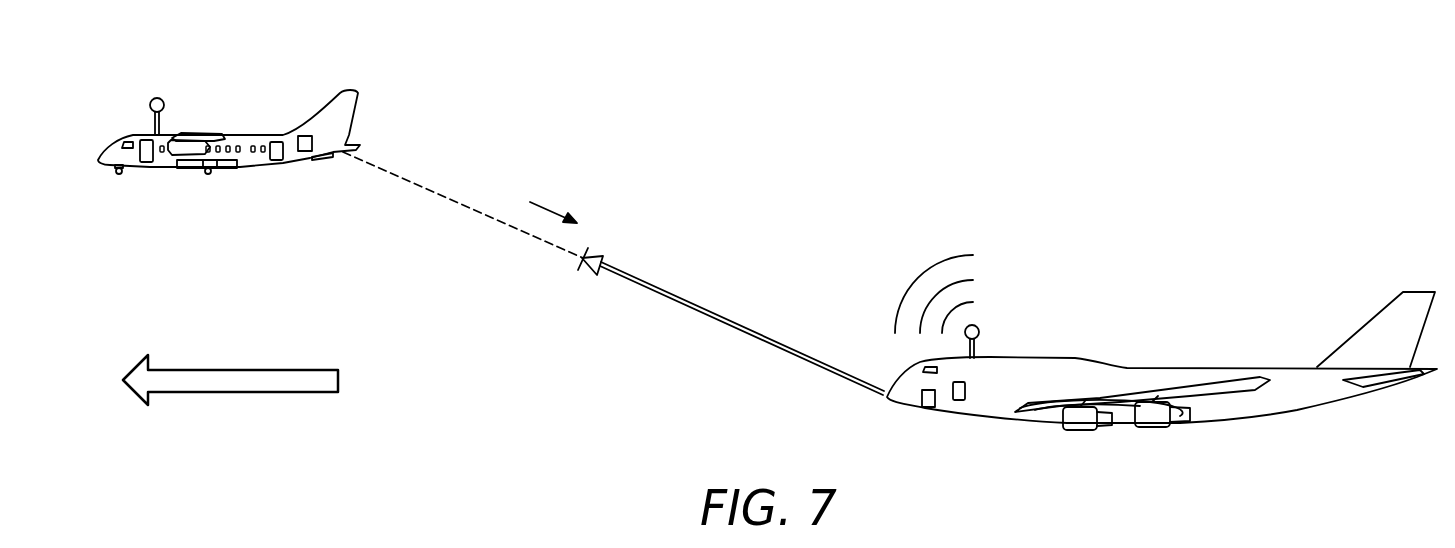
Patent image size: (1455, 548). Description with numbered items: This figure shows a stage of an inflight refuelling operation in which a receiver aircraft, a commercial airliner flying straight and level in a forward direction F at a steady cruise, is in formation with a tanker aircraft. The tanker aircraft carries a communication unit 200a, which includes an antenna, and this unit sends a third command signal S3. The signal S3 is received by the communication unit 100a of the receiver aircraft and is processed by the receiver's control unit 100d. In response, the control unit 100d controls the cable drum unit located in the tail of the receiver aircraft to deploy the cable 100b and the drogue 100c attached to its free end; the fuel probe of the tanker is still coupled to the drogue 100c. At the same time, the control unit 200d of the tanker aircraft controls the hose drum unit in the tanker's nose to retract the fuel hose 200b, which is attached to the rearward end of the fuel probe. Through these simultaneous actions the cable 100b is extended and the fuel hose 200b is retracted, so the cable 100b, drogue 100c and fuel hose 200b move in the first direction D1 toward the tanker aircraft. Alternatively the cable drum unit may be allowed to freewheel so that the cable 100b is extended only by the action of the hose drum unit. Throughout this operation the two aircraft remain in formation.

The communication unit 100a is at (157, 97).
The cable 100b is at (447, 198).
The drogue 100c is at (583, 277).
The control unit 100d is at (305, 152).
The communication unit 200a is at (980, 333).
The fuel hose 200b is at (747, 335).
The control unit 200d is at (930, 408).
The third command signal S3 is at (925, 272).
The first direction D1 is at (559, 202).
The forward direction F is at (230, 399).